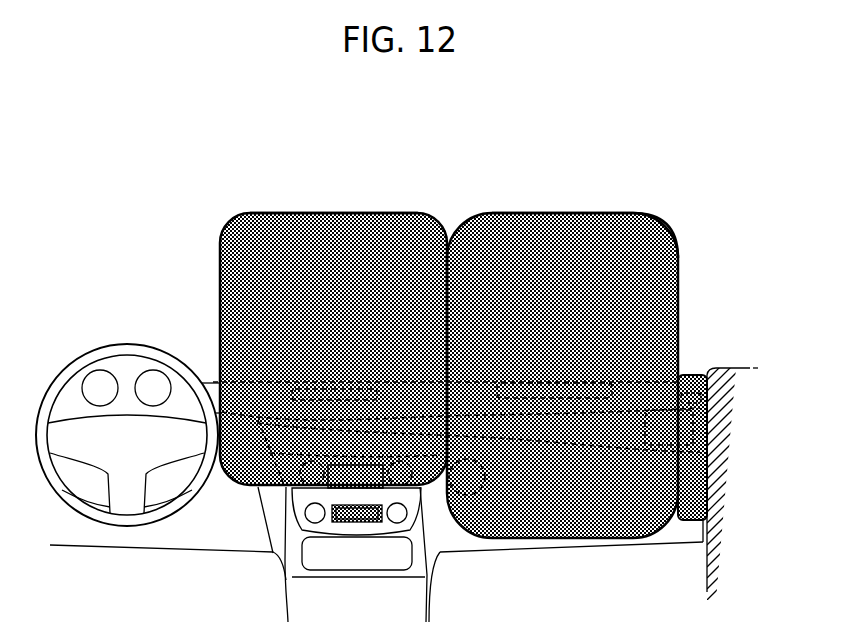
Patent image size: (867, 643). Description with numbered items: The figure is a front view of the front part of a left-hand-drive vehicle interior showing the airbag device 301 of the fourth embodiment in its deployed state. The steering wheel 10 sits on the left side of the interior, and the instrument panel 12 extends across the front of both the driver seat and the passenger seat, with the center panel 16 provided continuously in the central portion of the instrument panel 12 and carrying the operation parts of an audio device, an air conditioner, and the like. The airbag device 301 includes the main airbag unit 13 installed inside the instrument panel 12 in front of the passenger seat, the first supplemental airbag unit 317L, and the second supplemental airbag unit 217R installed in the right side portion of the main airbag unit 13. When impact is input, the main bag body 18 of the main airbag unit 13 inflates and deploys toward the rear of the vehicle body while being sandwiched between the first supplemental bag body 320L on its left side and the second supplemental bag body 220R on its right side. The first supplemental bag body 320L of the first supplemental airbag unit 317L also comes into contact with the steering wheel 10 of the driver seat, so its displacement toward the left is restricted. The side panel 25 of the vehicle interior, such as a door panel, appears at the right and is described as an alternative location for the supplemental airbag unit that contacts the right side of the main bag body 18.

The steering wheel 10 is at (110, 355).
The instrument panel 12 is at (213, 383).
The main airbag unit 13 is at (641, 203).
The center panel 16 is at (287, 502).
The main bag body 18 is at (665, 258).
The side panel 25 is at (703, 498).
The airbag device 301 is at (580, 194).
The first supplemental airbag unit 317L is at (349, 207).
The first supplemental bag body 320L is at (233, 238).
The second supplemental airbag unit 217R is at (708, 395).
The second supplemental bag body 220R is at (695, 484).